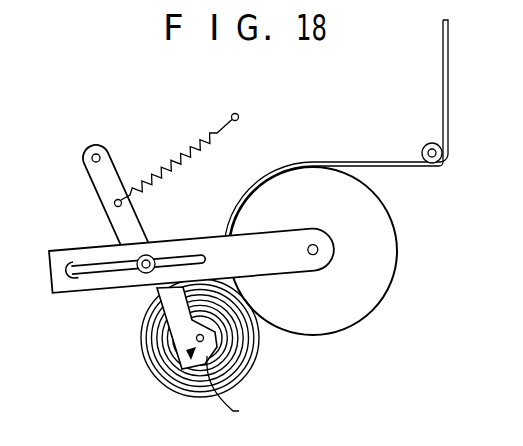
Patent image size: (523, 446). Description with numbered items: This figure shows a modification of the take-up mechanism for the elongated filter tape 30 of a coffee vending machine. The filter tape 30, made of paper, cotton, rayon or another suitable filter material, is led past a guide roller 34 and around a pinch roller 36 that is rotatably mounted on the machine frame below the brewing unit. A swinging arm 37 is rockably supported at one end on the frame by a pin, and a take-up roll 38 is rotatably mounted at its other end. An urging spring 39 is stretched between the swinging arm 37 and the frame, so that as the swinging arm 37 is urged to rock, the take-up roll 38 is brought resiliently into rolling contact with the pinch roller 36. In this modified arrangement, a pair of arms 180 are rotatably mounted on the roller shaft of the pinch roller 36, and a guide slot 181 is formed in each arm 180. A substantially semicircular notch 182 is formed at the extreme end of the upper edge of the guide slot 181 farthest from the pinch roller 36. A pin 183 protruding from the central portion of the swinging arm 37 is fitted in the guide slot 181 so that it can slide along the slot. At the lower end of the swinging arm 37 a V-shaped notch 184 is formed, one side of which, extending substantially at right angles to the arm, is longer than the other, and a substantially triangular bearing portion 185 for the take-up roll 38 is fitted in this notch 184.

The filter tape 30 is at (448, 81).
The guide roller 34 is at (425, 147).
The pinch roller 36 is at (368, 298).
The swinging arm 37 is at (98, 190).
The take-up roll 38 is at (157, 383).
The urging spring 39 is at (172, 160).
The arm 180 is at (214, 232).
The guide slot 181 is at (184, 256).
The semicircular notch 182 is at (72, 278).
The pin 183 is at (137, 278).
The V-shaped notch 184 is at (241, 390).
The bearing portion 185 is at (204, 338).